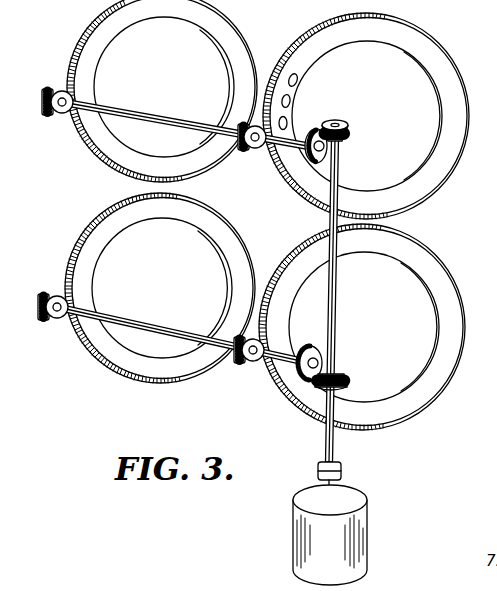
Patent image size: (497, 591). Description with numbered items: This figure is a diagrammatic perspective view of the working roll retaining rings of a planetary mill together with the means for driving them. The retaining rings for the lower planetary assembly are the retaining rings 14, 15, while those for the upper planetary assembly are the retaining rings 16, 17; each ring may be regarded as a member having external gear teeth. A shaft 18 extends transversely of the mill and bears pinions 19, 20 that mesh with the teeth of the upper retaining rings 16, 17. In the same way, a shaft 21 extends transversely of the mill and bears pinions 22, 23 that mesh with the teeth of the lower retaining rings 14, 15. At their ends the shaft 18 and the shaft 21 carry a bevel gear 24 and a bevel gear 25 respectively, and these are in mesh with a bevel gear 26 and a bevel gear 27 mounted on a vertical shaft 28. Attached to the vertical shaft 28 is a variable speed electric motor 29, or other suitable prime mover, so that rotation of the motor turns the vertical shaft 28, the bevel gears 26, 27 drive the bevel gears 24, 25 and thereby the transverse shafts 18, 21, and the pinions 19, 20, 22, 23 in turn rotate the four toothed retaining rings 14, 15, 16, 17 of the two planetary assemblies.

The working roll retaining ring 14 is at (460, 364).
The working roll retaining ring 15 is at (84, 238).
The working roll retaining ring 16 is at (446, 62).
The working roll retaining ring 17 is at (90, 34).
The shaft 18 is at (148, 112).
The pinion 19 is at (55, 115).
The pinion 20 is at (250, 150).
The shaft 21 is at (154, 325).
The pinion 22 is at (50, 320).
The pinion 23 is at (244, 362).
The bevel gear 24 is at (318, 130).
The bevel gear 25 is at (310, 346).
The bevel gear 26 is at (347, 132).
The bevel gear 27 is at (342, 377).
The vertical shaft 28 is at (339, 300).
The variable speed electric motor 29 is at (292, 532).